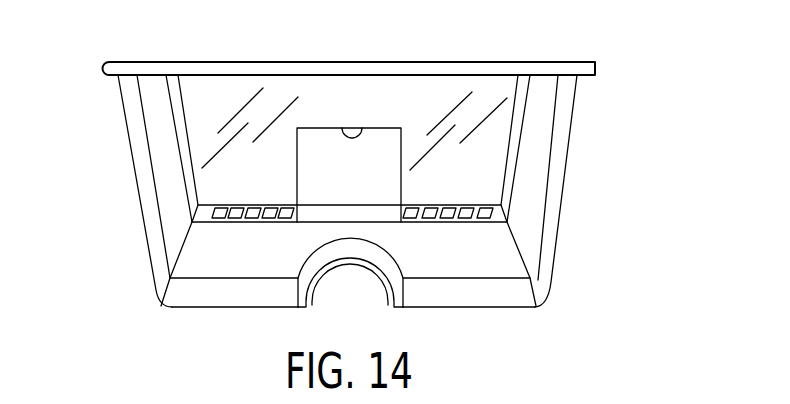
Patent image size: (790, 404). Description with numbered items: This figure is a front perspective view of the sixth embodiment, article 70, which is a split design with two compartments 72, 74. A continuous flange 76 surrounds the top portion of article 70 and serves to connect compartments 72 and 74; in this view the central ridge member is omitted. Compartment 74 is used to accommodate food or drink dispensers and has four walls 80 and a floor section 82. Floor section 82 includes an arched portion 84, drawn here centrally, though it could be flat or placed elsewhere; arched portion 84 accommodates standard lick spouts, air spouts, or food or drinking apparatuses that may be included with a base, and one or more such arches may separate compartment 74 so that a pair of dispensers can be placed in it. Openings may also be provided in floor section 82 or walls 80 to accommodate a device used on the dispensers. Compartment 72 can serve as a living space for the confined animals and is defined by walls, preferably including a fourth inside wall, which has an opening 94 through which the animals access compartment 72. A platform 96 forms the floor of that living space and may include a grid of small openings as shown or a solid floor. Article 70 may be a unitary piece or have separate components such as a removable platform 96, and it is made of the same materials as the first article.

The article 70 is at (616, 105).
The compartment 72 is at (451, 88).
The compartment 74 is at (523, 298).
The continuous flange 76 is at (593, 67).
The walls 80 is at (157, 253).
The floor section 82 is at (253, 300).
The arched portion 84 is at (349, 247).
The opening 94 is at (358, 127).
The platform 96 is at (497, 207).